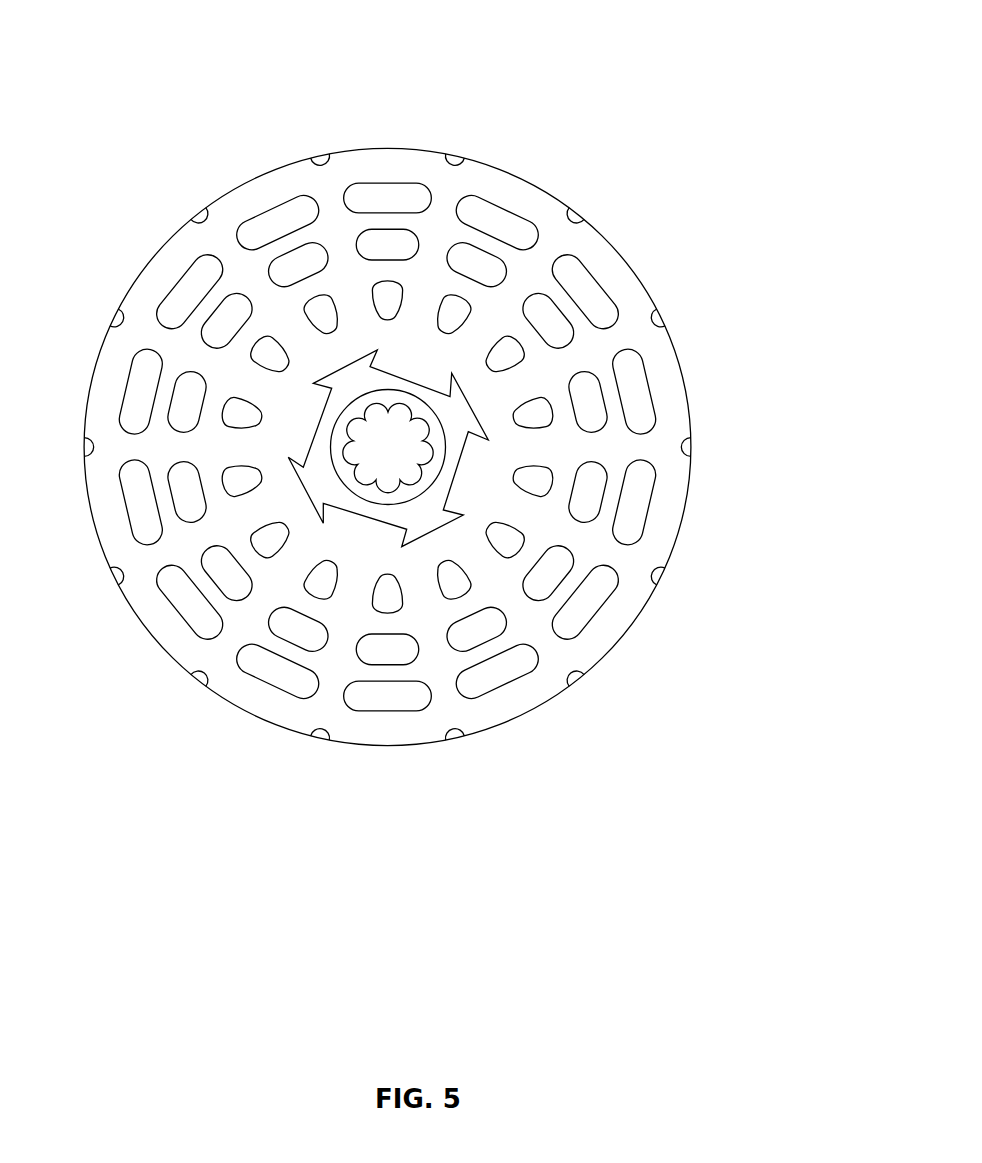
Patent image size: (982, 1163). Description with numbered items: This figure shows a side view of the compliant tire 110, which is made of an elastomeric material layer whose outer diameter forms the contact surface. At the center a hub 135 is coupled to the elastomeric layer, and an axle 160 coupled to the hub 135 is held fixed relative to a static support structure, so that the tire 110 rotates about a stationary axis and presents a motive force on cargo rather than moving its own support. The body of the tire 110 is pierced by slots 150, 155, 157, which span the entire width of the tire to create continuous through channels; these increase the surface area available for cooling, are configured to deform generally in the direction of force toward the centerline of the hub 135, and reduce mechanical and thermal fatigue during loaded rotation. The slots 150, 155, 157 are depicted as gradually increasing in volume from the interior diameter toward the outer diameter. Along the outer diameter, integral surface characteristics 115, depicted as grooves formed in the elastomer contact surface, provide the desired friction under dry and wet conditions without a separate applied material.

The tire 110 is at (608, 273).
The surface characteristics 115 is at (690, 448).
The hub 135 is at (465, 408).
The slot 150 is at (568, 273).
The slot 155 is at (540, 316).
The slot 157 is at (507, 353).
The axle 160 is at (397, 493).